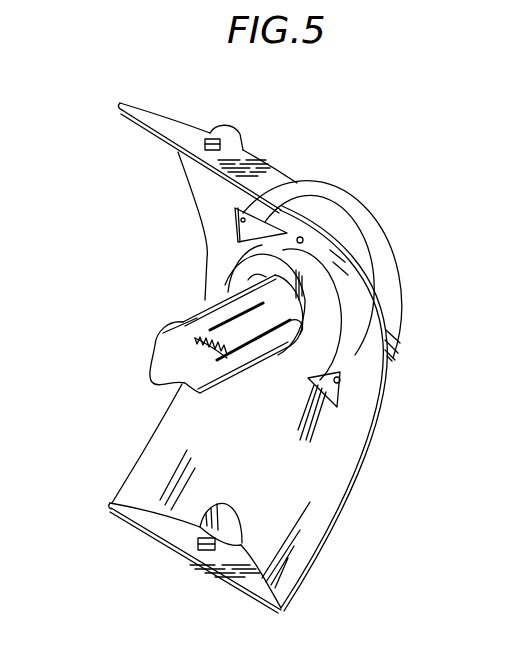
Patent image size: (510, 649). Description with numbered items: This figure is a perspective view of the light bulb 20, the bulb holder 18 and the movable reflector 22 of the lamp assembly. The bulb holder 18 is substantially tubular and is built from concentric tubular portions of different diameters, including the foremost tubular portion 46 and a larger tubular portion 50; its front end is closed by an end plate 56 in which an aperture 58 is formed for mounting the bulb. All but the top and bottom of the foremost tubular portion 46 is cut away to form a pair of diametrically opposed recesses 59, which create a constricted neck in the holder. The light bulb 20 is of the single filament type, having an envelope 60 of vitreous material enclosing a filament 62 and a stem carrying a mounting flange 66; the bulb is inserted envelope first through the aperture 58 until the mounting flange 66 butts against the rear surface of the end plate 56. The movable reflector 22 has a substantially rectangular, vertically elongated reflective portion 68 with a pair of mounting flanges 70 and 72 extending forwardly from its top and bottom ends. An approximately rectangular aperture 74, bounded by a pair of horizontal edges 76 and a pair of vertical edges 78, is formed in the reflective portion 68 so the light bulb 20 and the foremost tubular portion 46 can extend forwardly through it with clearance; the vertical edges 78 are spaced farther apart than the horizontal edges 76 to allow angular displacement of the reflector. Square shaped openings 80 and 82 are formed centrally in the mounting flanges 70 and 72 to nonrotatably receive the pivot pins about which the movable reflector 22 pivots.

The bulb holder 18 is at (347, 188).
The light bulb 20 is at (163, 341).
The movable reflector 22 is at (133, 460).
The foremost tubular portion 46 is at (330, 270).
The tubular portion 50 is at (380, 287).
The end plate 56 is at (277, 363).
The aperture 58 is at (303, 373).
The recesses 59 is at (352, 258).
The envelope 60 is at (180, 323).
The filament 62 is at (216, 368).
The mounting flange 66 is at (250, 273).
The reflective portion 68 is at (333, 447).
The mounting flange 70 is at (121, 110).
The mounting flange 72 is at (157, 527).
The aperture 74 is at (333, 307).
The horizontal edges 76 is at (301, 237).
The vertical edges 78 is at (237, 218).
The square shaped opening 80 is at (212, 139).
The square shaped opening 82 is at (197, 548).